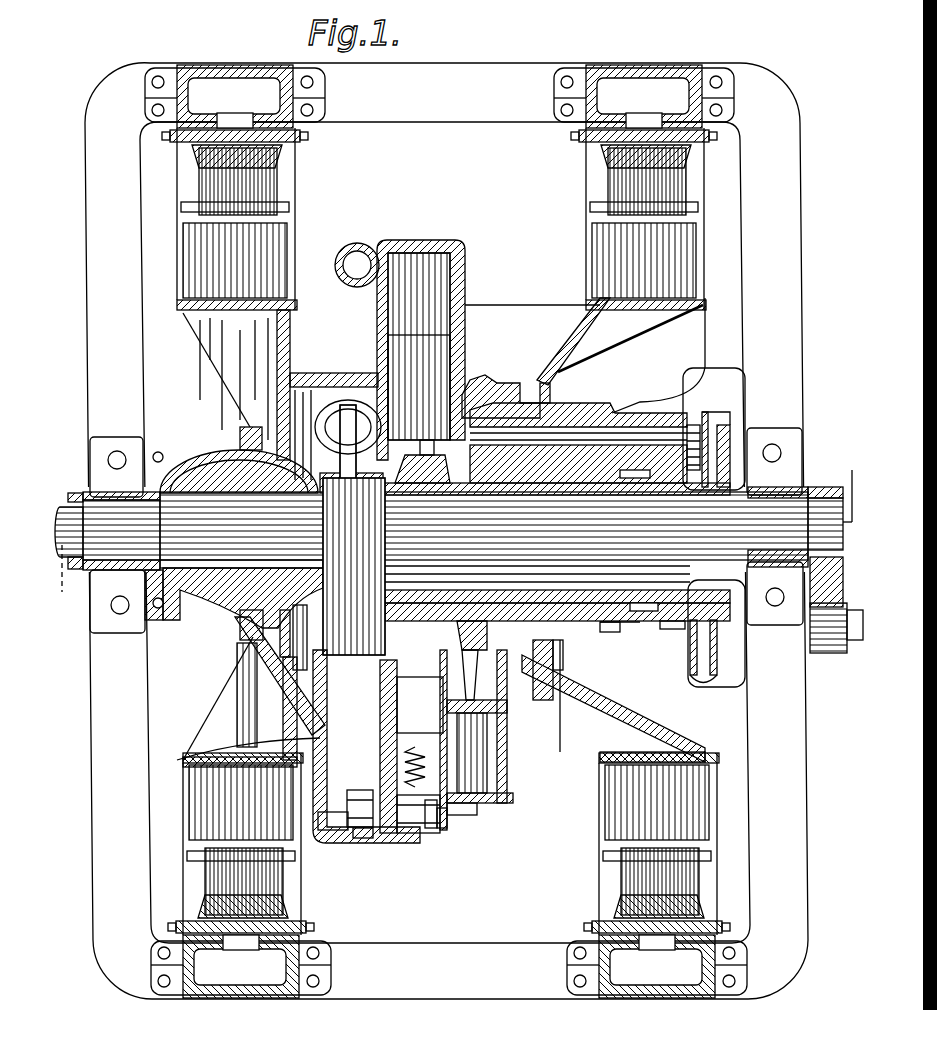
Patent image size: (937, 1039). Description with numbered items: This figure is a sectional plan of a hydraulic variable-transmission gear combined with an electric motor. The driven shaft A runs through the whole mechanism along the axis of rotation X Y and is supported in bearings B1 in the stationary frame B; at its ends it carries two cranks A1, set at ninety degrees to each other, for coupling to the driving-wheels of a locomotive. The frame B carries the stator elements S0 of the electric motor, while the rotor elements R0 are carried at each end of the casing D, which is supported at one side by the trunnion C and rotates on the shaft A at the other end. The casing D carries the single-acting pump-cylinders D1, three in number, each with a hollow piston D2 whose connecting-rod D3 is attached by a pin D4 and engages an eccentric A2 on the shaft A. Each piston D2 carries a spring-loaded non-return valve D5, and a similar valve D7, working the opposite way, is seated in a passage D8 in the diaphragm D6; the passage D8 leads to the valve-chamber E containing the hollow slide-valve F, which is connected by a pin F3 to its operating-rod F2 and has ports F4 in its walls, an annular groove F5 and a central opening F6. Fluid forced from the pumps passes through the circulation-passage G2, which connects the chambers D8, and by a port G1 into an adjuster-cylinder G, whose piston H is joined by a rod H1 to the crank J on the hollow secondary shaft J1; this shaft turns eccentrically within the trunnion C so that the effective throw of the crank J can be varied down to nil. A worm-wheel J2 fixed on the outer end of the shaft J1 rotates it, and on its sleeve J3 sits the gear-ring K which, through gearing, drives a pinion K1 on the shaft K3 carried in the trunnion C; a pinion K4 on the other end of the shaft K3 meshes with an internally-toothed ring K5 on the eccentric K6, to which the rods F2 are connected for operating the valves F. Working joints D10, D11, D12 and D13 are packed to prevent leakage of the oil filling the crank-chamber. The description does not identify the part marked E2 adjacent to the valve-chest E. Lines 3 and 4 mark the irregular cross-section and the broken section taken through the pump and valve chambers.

The stationary frame B is at (790, 733).
The bearings B1 is at (787, 490).
The stator elements S0 is at (250, 178).
The rotor elements R0 is at (250, 247).
The driven shaft A is at (459, 570).
The cranks A1 is at (83, 493).
The eccentric or crank A2 is at (354, 566).
The axis of rotation Y is at (843, 487).
The axis of rotation X is at (64, 581).
The casing D is at (302, 634).
The pump-cylinders D1 is at (348, 400).
The piston D2 is at (337, 705).
The connecting-rod D3 is at (380, 746).
The pin D4 is at (360, 843).
The spring-loaded non-return valve D5 is at (330, 833).
The diaphragm D6 is at (412, 835).
The valve D7 is at (430, 835).
The chamber or passage D8 is at (442, 835).
The working joint D10 is at (195, 450).
The working joint D11 is at (613, 370).
The working joint D12 is at (720, 443).
The working joint D13 is at (620, 630).
The adjuster-cylinder G is at (423, 283).
The port or passage G1 is at (235, 704).
The circulation-passage G2 is at (355, 268).
The adjuster-piston H is at (455, 335).
The rod H1 is at (385, 466).
The gear-ring K is at (693, 620).
The pinion K1 is at (692, 433).
The shaft K3 is at (663, 440).
The pinion K4 is at (556, 470).
The internally-toothed ring K5 is at (500, 397).
The eccentric K6 is at (537, 600).
The slide-valve F is at (503, 803).
The operating-rod F2 is at (493, 378).
The pin F3 is at (497, 710).
The ports or openings F4 is at (507, 733).
The annular groove F5 is at (503, 797).
The central opening F6 is at (545, 680).
The valve-chamber E is at (487, 813).
The bushing flange E2 is at (440, 808).
The support or trunnion C is at (574, 664).
The crank or eccentric J is at (558, 686).
The secondary shaft J1 is at (618, 640).
The worm-wheel J2 is at (707, 643).
The sleeve J3 is at (703, 627).
The section line 3 is at (413, 252).
The section line 4 is at (366, 267).